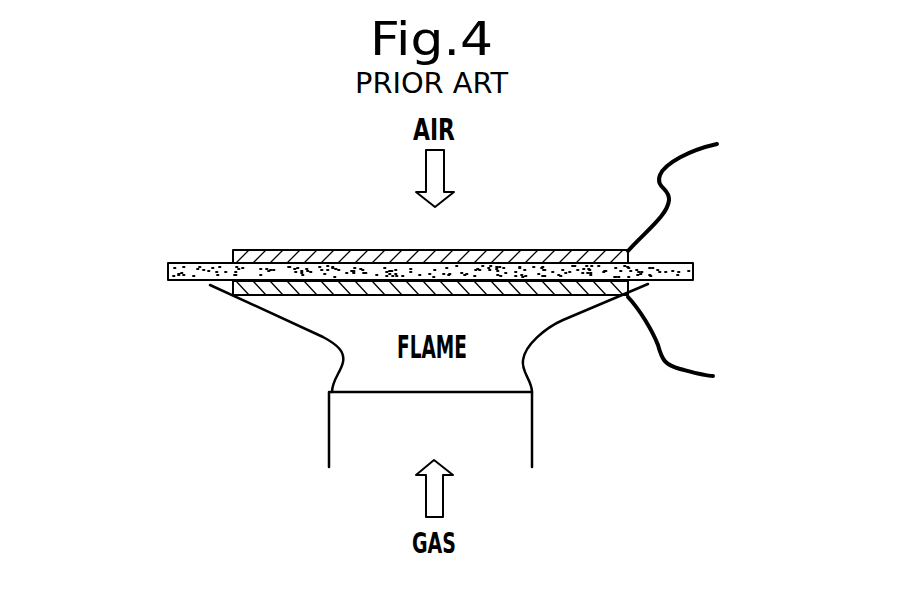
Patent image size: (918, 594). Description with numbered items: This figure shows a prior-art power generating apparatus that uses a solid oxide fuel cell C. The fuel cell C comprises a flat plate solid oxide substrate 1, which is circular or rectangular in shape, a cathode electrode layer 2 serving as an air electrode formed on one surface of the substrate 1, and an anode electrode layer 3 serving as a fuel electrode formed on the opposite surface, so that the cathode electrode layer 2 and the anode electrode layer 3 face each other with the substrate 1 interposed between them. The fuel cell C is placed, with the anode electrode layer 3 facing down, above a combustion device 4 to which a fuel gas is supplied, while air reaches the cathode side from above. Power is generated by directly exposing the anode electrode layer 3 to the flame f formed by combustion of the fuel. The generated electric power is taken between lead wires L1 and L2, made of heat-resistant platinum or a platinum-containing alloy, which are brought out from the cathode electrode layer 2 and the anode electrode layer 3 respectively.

The flat plate solid oxide substrate 1 is at (183, 265).
The cathode electrode layer 2 is at (313, 251).
The anode electrode layer 3 is at (283, 296).
The combustion device 4 is at (532, 433).
The solid oxide fuel cell C is at (424, 249).
The flame f is at (575, 322).
The lead wire L1 is at (690, 190).
The lead wire L2 is at (690, 348).